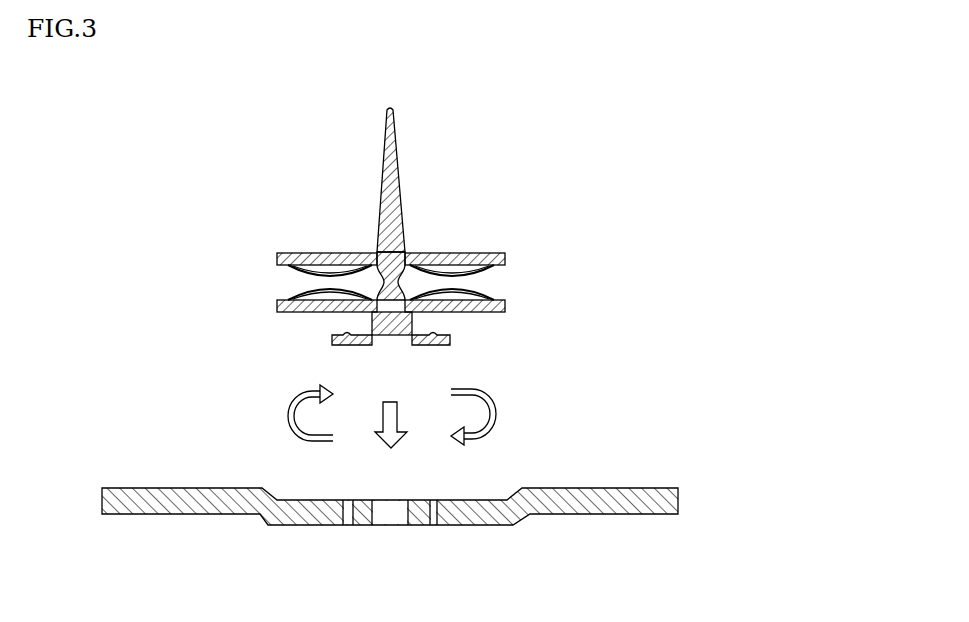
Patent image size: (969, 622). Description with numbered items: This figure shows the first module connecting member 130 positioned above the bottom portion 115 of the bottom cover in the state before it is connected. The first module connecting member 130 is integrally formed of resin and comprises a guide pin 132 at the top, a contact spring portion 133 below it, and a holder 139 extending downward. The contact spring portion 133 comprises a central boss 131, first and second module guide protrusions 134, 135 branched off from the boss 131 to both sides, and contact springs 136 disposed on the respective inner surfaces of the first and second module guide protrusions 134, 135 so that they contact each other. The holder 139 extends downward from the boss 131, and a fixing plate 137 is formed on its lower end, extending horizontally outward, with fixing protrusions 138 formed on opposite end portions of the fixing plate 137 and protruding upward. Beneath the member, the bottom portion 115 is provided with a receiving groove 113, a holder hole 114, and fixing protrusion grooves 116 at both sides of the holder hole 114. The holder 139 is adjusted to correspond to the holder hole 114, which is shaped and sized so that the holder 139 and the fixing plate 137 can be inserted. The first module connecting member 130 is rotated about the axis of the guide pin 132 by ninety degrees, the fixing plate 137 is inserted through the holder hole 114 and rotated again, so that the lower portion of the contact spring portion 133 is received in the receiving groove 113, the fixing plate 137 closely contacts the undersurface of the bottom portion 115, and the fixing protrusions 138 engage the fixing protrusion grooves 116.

The first module connecting member 130 is at (370, 169).
The central boss 131 is at (407, 249).
The guide pin 132 is at (400, 190).
The contact spring portion 133 is at (288, 248).
The first module guide protrusion 134 is at (277, 258).
The second module guide protrusion 135 is at (503, 257).
The contact springs 136 is at (490, 290).
The fixing plate 137 is at (333, 341).
The fixing protrusions 138 is at (441, 328).
The holder 139 is at (382, 345).
The receiving groove 113 is at (480, 500).
The holder hole 114 is at (398, 512).
The bottom portion 115 is at (670, 497).
The fixing protrusion grooves 116 is at (347, 525).